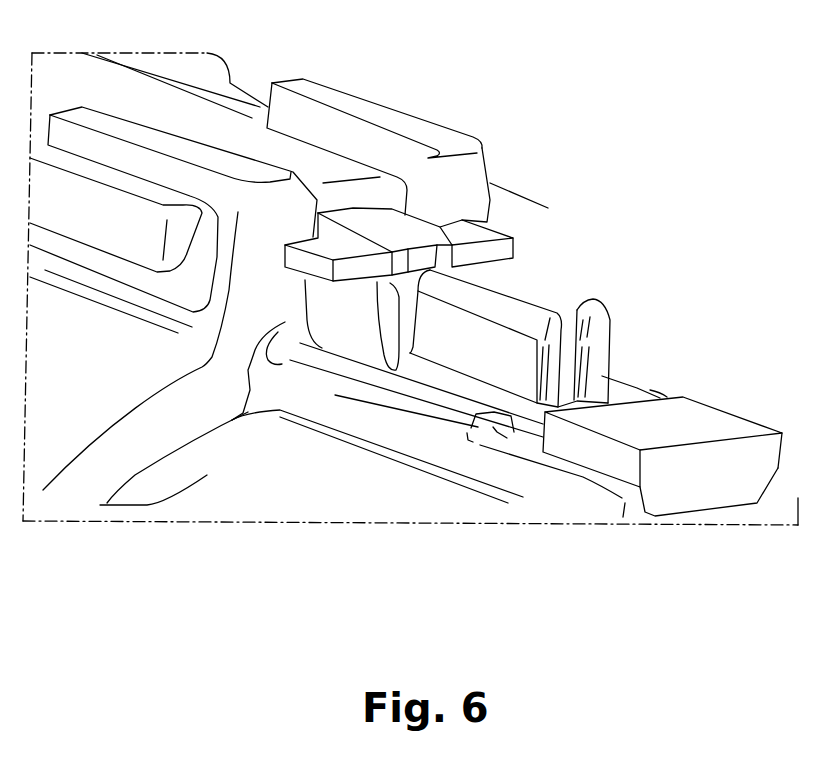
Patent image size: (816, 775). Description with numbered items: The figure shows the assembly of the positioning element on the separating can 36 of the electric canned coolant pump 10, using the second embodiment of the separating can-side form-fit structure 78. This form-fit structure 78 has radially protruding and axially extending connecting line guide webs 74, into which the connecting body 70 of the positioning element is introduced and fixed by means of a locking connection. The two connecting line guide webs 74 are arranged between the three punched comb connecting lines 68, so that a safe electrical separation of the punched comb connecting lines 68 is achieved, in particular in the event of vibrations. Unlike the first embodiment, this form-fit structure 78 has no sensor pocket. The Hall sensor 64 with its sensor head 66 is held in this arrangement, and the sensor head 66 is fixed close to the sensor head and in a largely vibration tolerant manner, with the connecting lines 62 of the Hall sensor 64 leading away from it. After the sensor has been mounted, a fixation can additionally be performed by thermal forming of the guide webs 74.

The electric canned coolant pump 10 is at (590, 147).
The separating can 36 is at (100, 505).
The connecting lines of the Hall sensor 62 is at (400, 360).
The Hall sensor 64 is at (720, 400).
The sensor head 66 is at (727, 477).
The punched comb connecting lines 68 is at (514, 233).
The connecting body 70 is at (283, 150).
The connecting line guide webs 74 is at (582, 311).
The separating can-side form-fit structure 78 is at (457, 192).